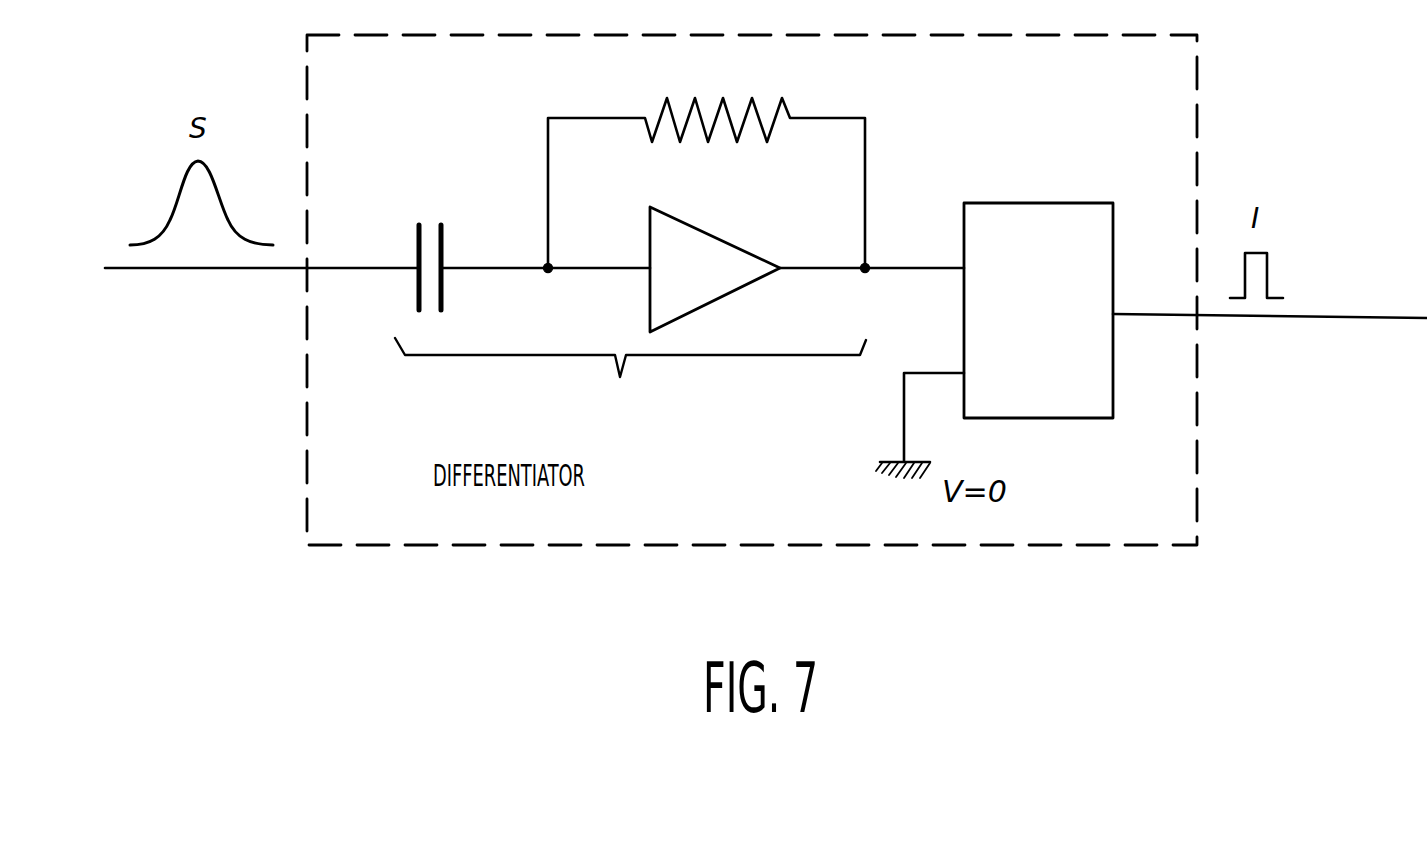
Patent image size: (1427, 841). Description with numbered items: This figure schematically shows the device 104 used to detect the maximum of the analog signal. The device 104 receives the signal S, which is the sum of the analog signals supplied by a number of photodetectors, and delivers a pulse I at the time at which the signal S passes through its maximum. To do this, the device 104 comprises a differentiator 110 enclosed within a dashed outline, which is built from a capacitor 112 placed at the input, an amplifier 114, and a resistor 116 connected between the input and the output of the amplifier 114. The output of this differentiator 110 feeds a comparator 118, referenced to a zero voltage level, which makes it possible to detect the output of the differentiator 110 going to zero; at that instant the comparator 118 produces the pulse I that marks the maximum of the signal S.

The device 104 is at (310, 452).
The differentiator 110 is at (630, 379).
The capacitor 112 is at (432, 222).
The amplifier 114 is at (730, 263).
The resistor 116 is at (705, 103).
The comparator 118 is at (1002, 222).